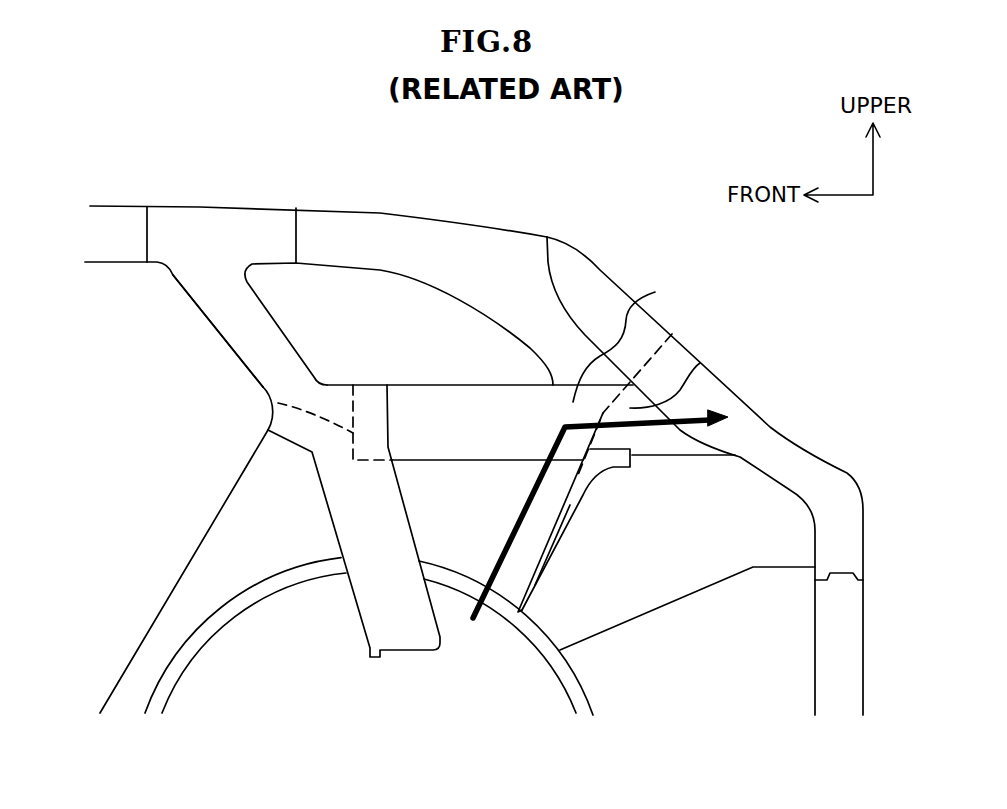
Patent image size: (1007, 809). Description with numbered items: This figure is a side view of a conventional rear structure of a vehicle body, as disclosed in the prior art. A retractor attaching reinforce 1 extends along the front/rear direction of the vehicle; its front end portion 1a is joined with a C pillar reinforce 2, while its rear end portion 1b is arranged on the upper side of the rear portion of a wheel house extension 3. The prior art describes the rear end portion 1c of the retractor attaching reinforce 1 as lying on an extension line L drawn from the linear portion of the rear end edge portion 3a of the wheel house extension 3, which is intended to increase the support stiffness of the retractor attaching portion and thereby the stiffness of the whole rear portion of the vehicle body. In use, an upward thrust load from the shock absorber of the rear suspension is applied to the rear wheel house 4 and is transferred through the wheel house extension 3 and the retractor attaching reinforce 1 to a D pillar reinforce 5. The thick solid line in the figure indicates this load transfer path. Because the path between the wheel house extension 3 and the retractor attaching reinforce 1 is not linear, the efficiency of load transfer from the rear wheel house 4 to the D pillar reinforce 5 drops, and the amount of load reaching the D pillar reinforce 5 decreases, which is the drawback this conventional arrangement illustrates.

The retractor attaching reinforce 1 is at (425, 370).
The front end portion of the retractor attaching reinforce 1a is at (273, 402).
The rear end portion of the retractor attaching reinforce 1b is at (630, 340).
The rear end portion of the retractor attaching reinforce 1c is at (700, 363).
The C pillar reinforce 2 is at (211, 349).
The wheel house extension 3 is at (598, 500).
The rear end edge portion of the wheel house extension 3a is at (550, 547).
The rear wheel house 4 is at (610, 706).
The D pillar reinforce 5 is at (626, 270).
The extension line L is at (672, 336).